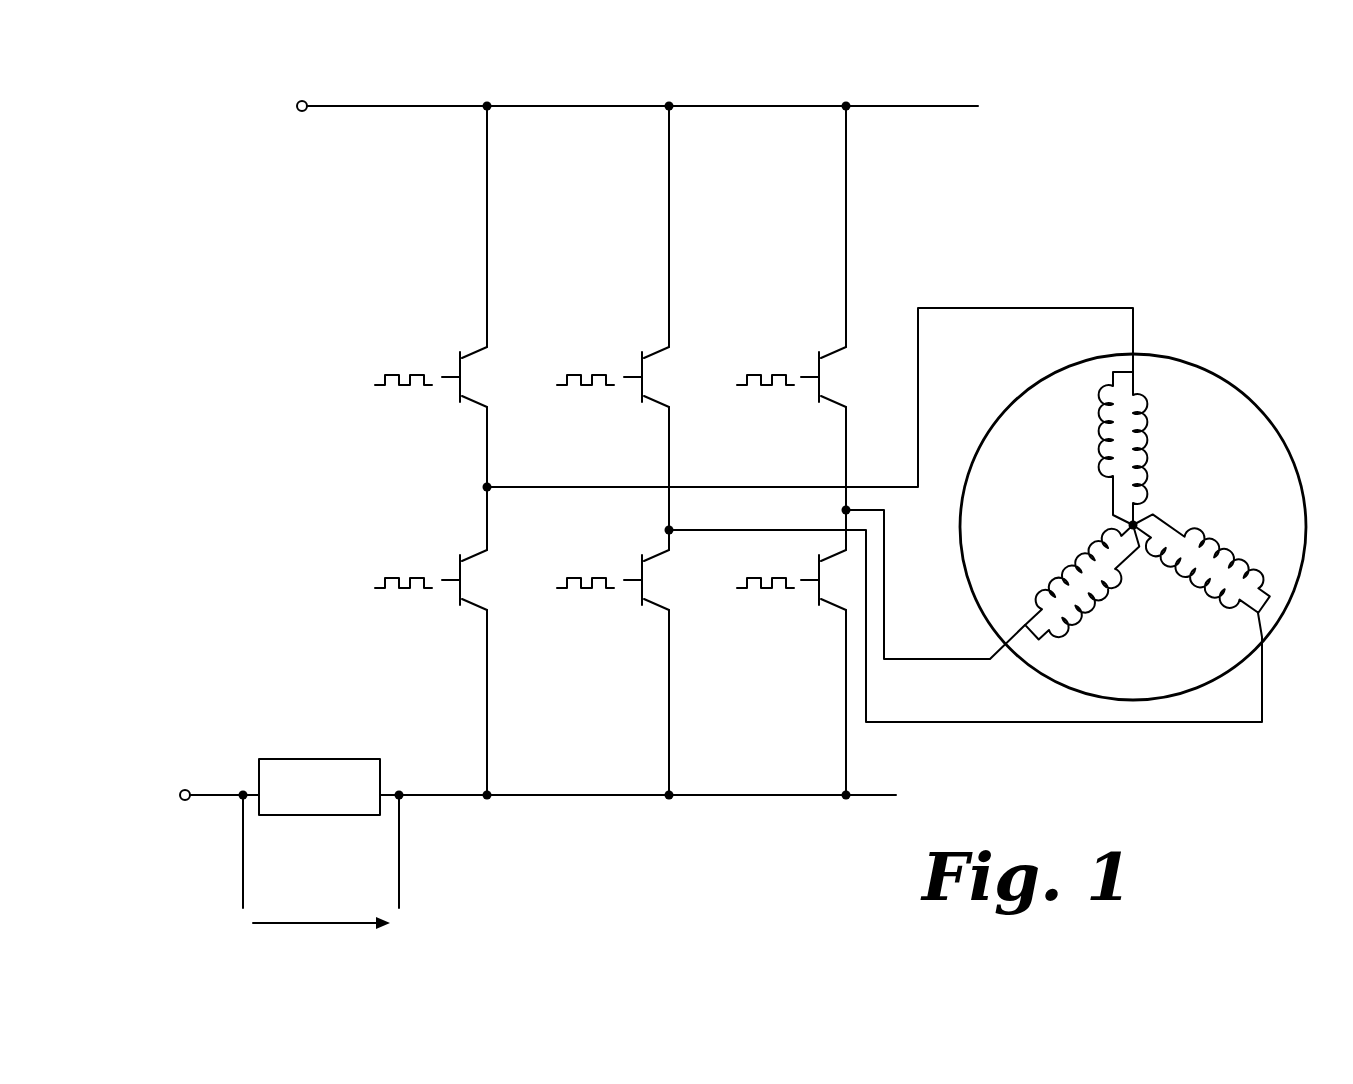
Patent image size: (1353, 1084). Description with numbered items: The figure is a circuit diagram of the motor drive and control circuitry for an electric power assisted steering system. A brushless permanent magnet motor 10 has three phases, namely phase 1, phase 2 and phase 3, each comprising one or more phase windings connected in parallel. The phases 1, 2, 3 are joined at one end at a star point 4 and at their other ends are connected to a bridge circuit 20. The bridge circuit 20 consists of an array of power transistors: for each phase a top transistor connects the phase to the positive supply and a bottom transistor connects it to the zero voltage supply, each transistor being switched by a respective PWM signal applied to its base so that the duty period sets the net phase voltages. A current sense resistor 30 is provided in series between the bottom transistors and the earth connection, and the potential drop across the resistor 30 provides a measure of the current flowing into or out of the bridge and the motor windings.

The bridge circuit 20 is at (704, 529).
The brushless permanent magnet motor 10 is at (1133, 483).
The phase 1 is at (1150, 480).
The phase 2 is at (1243, 578).
The phase 3 is at (1057, 641).
The star point 4 is at (1128, 525).
The current sense resistor 30 is at (300, 765).